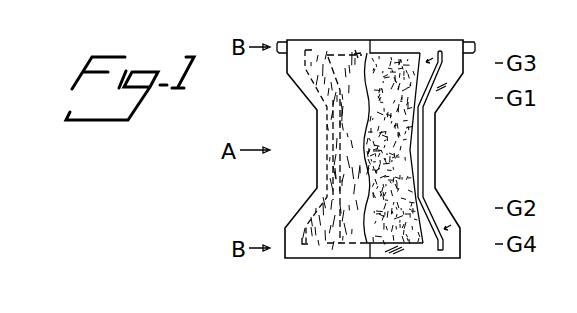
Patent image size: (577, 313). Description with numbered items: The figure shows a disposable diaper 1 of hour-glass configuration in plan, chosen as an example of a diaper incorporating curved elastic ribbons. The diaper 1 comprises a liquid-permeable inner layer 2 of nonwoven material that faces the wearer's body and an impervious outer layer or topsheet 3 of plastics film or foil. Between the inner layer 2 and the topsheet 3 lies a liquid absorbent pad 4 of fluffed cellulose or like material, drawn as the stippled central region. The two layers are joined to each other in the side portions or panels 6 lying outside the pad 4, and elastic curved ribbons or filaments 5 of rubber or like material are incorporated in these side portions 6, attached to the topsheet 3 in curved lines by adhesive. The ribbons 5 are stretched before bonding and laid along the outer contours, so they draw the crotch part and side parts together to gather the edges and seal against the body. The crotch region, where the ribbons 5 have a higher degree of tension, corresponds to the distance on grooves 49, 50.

The disposable diaper 1 is at (392, 44).
The liquid-permeable inner layer 2 is at (345, 237).
The impervious outer layer or topsheet 3 is at (442, 95).
The liquid absorbent pad 4 is at (404, 64).
The elastic curved ribbons or filaments 5 is at (419, 155).
The side portions or panels 6 is at (320, 142).
The groove 49 is at (321, 112).
The groove 50 is at (423, 135).